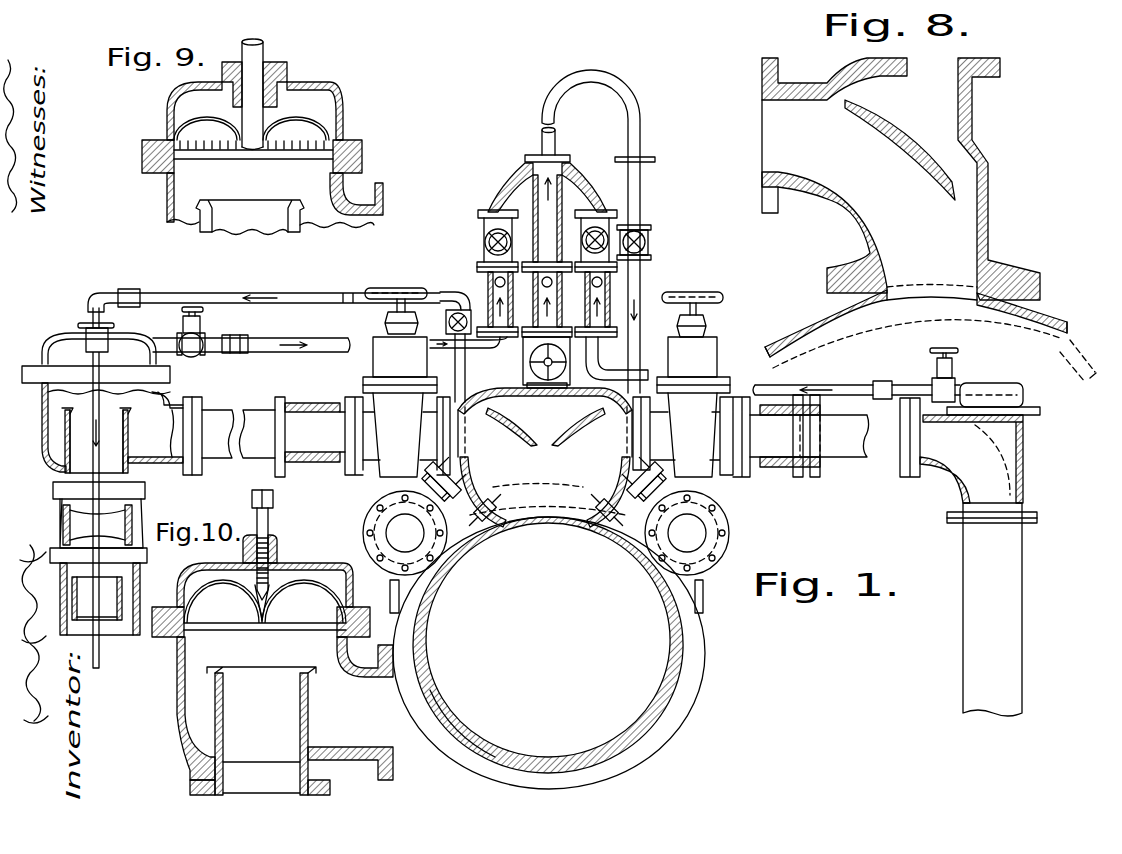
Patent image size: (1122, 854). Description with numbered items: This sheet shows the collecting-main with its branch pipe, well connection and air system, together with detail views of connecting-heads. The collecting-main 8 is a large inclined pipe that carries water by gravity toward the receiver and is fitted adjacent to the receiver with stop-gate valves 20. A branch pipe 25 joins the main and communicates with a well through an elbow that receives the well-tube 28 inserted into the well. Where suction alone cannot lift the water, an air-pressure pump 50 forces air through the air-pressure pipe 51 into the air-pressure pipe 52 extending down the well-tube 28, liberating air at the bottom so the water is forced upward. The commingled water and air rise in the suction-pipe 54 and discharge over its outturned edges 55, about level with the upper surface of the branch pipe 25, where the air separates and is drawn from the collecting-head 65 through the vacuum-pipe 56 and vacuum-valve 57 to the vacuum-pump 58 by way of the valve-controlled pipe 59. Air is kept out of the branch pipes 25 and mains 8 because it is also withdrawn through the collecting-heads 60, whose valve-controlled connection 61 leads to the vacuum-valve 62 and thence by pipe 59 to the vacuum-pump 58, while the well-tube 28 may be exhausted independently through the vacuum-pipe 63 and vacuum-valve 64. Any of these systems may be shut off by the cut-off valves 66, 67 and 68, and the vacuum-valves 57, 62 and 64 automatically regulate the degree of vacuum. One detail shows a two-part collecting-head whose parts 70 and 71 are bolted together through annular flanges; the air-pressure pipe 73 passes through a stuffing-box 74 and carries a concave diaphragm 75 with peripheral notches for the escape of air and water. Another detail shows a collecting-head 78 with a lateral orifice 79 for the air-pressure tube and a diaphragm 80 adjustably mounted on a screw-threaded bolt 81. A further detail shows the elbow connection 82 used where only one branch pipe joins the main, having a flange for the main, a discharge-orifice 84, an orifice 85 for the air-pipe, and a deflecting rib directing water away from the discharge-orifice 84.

In FIG. 8, the collecting-main 8 is at (930, 334).
In FIG. 1, the collecting-main 8 is at (552, 653).
In FIG. 1, the stop-gate valve 20 is at (547, 382).
In FIG. 1, the branch pipe 25 is at (535, 445).
In FIG. 1, the well-tube 28 is at (140, 578).
In FIG. 1, the air-pressure pump 50 is at (421, 513).
In FIG. 1, the air-pressure pipe 51 is at (264, 291).
In FIG. 1, the air-pressure pipe 52 is at (100, 658).
In FIG. 1, the suction-pipe 54 is at (110, 598).
In FIG. 10, the outturned edges 55 is at (264, 720).
In FIG. 1, the outturned edges 55 is at (113, 441).
In FIG. 1, the vacuum-pipe 56 is at (251, 332).
In FIG. 1, the vacuum-valve 57 is at (484, 288).
In FIG. 1, the vacuum-pump 58 is at (675, 513).
In FIG. 1, the valve-controlled pipe 59 is at (641, 210).
In FIG. 1, the collecting-head 60 is at (545, 457).
In FIG. 1, the valve-controlled connection 61 is at (468, 368).
In FIG. 1, the vacuum-valve 62 is at (547, 233).
In FIG. 1, the vacuum-pipe 63 is at (856, 375).
In FIG. 1, the vacuum-valve 64 is at (607, 287).
In FIG. 1, the collecting-head 65 is at (112, 391).
In FIG. 1, the cut-off valve 66 is at (484, 245).
In FIG. 1, the cut-off valve 67 is at (583, 232).
In FIG. 1, the cut-off valve 68 is at (524, 364).
In FIG. 9, the head part 70 is at (239, 111).
In FIG. 9, the head part 71 is at (259, 187).
In FIG. 9, the air-pressure pipe 73 is at (259, 43).
In FIG. 9, the stuffing-box 74 is at (289, 66).
In FIG. 9, the concave diaphragm 75 is at (253, 138).
In FIG. 10, the collecting-head 78 is at (269, 716).
In FIG. 1, the collecting-head 78 is at (970, 549).
In FIG. 10, the lateral orifice 79 is at (263, 600).
In FIG. 10, the diaphragm 80 is at (265, 605).
In FIG. 10, the screw-threaded bolt 81 is at (271, 555).
In FIG. 8, the elbow connection 82 is at (977, 179).
In FIG. 8, the discharge-orifice 84 is at (820, 175).
In FIG. 8, the orifice for the air-pipe 85 is at (900, 150).